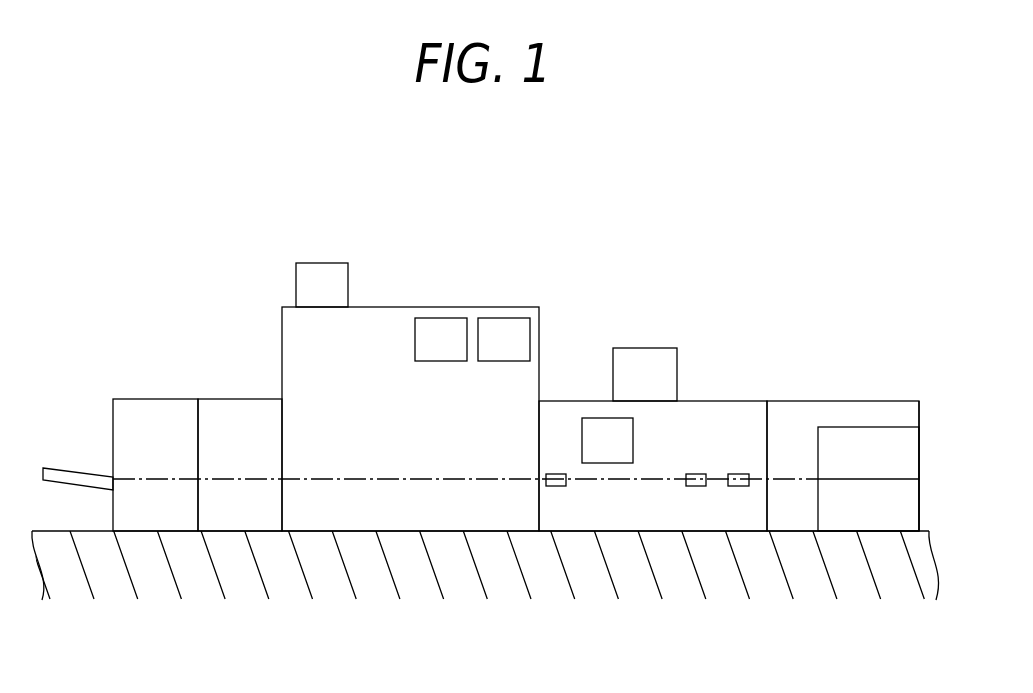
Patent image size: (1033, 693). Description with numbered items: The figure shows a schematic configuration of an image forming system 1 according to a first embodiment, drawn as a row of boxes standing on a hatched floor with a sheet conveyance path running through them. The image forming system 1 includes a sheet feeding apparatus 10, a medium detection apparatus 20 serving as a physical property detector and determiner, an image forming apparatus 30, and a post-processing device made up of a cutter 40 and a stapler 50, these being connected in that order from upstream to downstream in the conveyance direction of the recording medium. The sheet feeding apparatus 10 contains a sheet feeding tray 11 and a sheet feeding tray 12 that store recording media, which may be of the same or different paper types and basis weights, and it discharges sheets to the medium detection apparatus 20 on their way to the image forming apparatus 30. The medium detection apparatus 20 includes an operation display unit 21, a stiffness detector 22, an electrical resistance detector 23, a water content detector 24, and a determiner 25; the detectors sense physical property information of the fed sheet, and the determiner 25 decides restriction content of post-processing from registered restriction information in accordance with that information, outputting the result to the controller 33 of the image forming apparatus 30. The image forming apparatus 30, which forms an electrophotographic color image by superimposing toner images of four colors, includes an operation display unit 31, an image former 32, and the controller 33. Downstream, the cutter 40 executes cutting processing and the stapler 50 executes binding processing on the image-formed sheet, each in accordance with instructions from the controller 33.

The image forming system 1 is at (475, 162).
The sheet feeding apparatus 10 is at (845, 412).
The sheet feeding tray 11 is at (878, 438).
The sheet feeding tray 12 is at (914, 506).
The medium detection apparatus 20 is at (556, 412).
The operation display unit 21 is at (643, 358).
The stiffness detector 22 is at (738, 472).
The electrical resistance detector 23 is at (697, 472).
The water content detector 24 is at (556, 472).
The determiner 25 is at (630, 437).
The image forming apparatus 30 is at (375, 326).
The operation display unit 31 is at (316, 275).
The image former 32 is at (437, 326).
The controller 33 is at (502, 326).
The cutter 40 is at (227, 412).
The stapler 50 is at (137, 412).